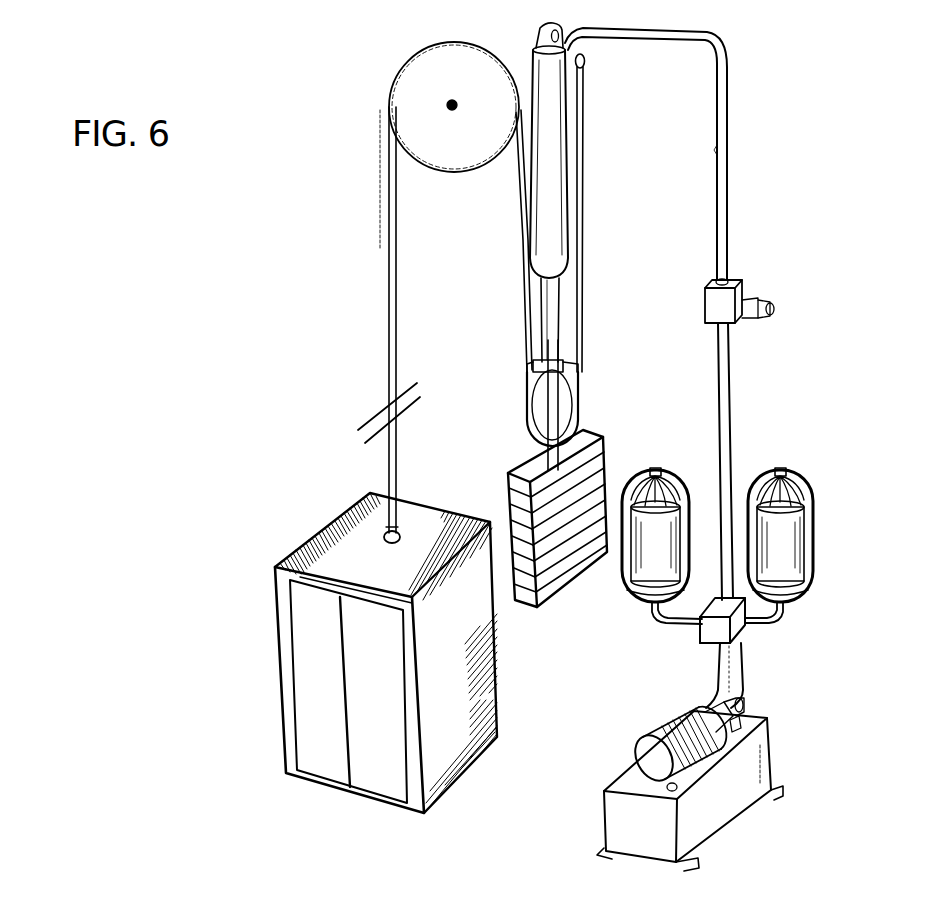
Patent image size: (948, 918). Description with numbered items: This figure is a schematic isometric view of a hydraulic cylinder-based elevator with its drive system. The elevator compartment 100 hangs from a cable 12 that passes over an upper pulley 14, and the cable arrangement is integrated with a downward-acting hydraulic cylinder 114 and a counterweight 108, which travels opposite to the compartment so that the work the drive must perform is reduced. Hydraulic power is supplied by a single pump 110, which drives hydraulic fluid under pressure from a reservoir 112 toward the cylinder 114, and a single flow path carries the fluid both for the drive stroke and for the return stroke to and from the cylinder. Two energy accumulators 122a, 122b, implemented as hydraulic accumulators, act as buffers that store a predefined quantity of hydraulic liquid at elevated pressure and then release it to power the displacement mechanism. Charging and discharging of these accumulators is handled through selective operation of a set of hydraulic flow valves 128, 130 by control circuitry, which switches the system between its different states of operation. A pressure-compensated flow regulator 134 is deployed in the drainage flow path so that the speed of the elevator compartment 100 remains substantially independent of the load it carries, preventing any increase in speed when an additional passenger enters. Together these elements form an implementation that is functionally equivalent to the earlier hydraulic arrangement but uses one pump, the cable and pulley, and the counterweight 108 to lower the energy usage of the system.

The cable 12 is at (388, 385).
The upper pulley 14 is at (408, 102).
The elevator compartment 100 is at (277, 655).
The counterweight 108 is at (543, 590).
The pump 110 is at (737, 712).
The reservoir 112 is at (737, 777).
The hydraulic cylinder 114 is at (545, 193).
The energy accumulator 122a is at (660, 468).
The energy accumulator 122b is at (797, 472).
The hydraulic flow valve 128 is at (747, 625).
The hydraulic flow valve 130 is at (715, 630).
The pressure-compensated flow regulator 134 is at (752, 290).